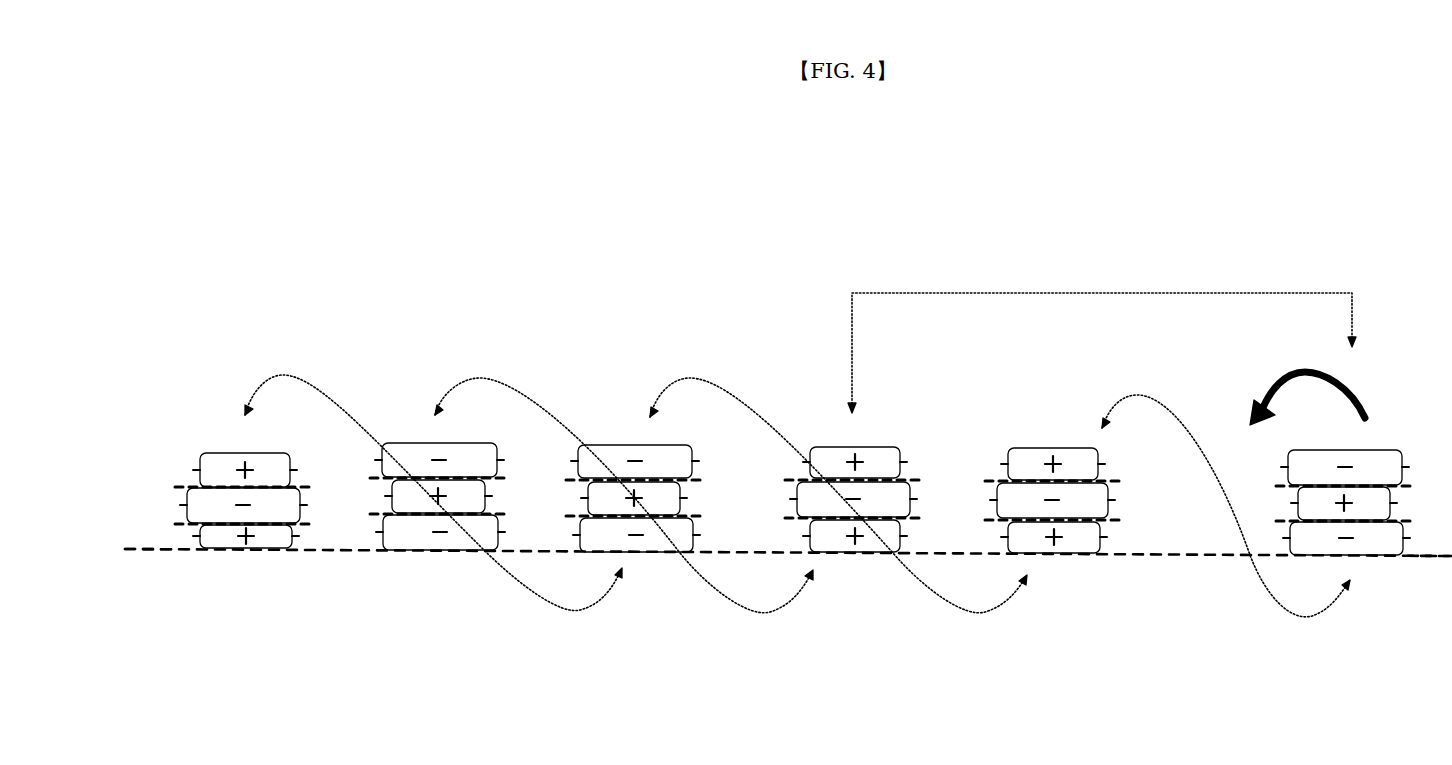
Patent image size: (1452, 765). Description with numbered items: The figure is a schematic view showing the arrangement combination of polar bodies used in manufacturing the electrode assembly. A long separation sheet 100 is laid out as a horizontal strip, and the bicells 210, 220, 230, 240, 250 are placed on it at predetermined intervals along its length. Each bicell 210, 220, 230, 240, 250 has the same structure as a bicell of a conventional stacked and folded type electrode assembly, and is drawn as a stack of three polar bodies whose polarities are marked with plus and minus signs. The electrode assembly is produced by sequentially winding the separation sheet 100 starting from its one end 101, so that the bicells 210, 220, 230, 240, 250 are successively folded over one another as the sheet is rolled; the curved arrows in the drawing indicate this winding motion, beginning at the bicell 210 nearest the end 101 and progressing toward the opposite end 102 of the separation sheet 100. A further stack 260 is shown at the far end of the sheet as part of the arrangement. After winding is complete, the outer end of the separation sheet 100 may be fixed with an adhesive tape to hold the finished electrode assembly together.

The separation sheet 100 is at (1172, 557).
The one end of separation sheet 101 is at (1422, 556).
The second end of substrate 102 is at (155, 551).
The bicell 210 is at (1385, 440).
The bicell 220 is at (1018, 433).
The bicell 230 is at (815, 437).
The bicell 240 is at (625, 432).
The bicell 250 is at (398, 432).
The sixth magnet stack 260 is at (220, 440).